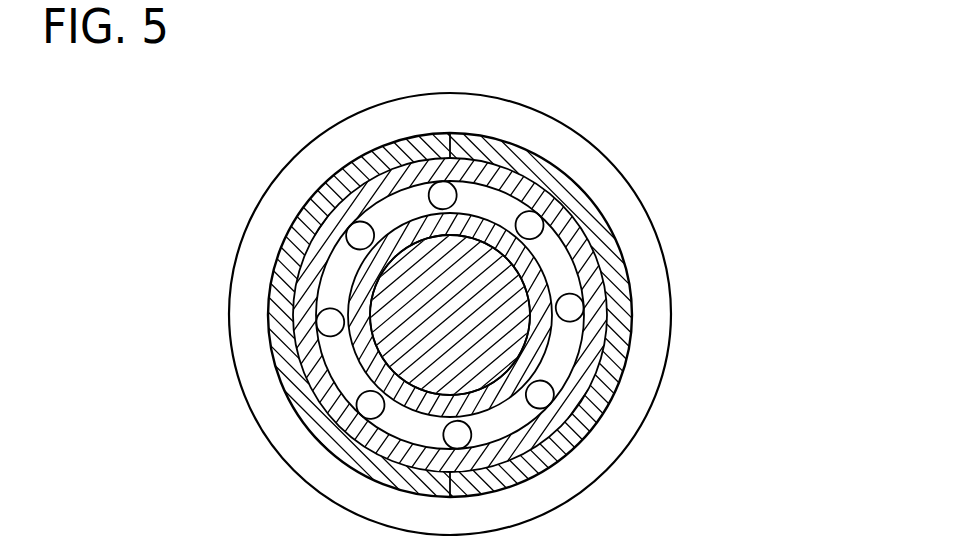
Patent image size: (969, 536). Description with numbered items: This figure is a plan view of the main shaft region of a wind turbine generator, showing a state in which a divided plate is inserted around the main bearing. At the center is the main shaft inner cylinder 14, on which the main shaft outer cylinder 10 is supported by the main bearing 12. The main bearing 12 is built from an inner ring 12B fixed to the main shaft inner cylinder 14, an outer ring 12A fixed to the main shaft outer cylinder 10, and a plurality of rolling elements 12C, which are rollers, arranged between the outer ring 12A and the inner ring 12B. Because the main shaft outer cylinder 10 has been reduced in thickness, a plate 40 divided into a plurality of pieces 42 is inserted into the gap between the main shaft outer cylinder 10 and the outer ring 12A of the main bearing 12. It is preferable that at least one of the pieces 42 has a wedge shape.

The main shaft outer cylinder 10 is at (553, 115).
The plate 40 is at (520, 297).
The pieces 42 is at (607, 217).
The main bearing 12 is at (540, 315).
The outer ring 12A is at (625, 282).
The inner ring 12B is at (547, 352).
The rolling elements 12C is at (585, 320).
The main shaft inner cylinder 14 is at (398, 297).